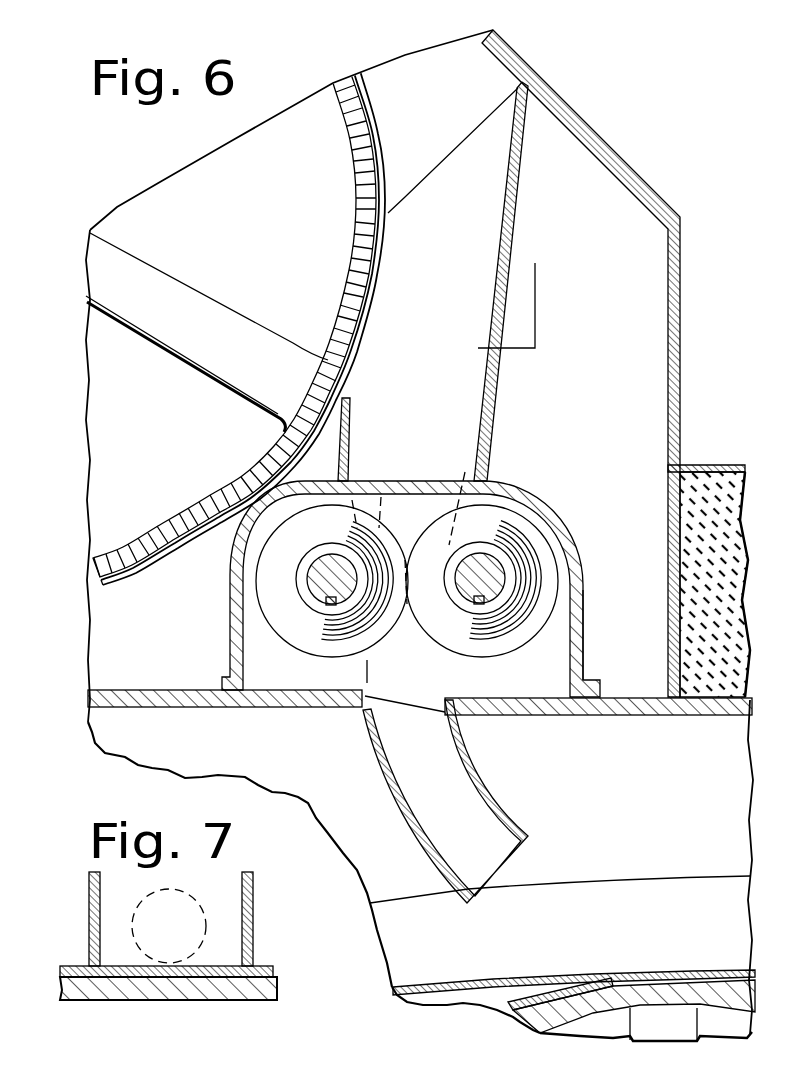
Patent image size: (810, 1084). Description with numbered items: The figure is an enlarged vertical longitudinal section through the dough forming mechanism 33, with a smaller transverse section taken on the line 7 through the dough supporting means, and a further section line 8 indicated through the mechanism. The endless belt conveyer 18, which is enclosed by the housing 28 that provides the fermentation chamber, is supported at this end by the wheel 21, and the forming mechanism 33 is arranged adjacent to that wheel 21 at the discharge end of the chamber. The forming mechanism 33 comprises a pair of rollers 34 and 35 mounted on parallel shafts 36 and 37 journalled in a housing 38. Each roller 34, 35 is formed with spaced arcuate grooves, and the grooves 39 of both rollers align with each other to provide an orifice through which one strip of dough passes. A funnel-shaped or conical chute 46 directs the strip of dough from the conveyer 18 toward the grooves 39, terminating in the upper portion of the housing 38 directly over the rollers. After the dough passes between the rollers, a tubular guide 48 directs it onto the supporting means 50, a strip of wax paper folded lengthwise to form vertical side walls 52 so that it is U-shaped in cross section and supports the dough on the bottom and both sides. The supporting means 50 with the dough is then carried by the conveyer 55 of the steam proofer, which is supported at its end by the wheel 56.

In FIG. 6, the section line 7— 7 is at (663, 868).
In FIG. 6, the section line 8— 8 is at (535, 263).
In FIG. 6, the conveyer 18 is at (374, 104).
In FIG. 6, the wheel 21 is at (355, 203).
In FIG. 6, the housing 28 is at (650, 186).
In FIG. 6, the forming mechanism 33 is at (532, 512).
In FIG. 6, the roller 34 is at (290, 638).
In FIG. 6, the roller 35 is at (515, 638).
In FIG. 6, the shaft 36 is at (327, 555).
In FIG. 6, the shaft 37 is at (481, 554).
In FIG. 6, the housing 38 is at (583, 556).
In FIG. 6, the arcuate groove 39 is at (425, 533).
In FIG. 6, the chute 46 is at (490, 393).
In FIG. 6, the tubular guide 48 is at (500, 808).
In FIG. 6, the supporting means 50 is at (432, 990).
In FIG. 7, the supporting means 50 is at (110, 965).
In FIG. 6, the side wall 52 is at (605, 884).
In FIG. 7, the side wall 52 is at (89, 905).
In FIG. 6, the conveyer 55 is at (590, 984).
In FIG. 6, the wheel 56 is at (537, 1017).